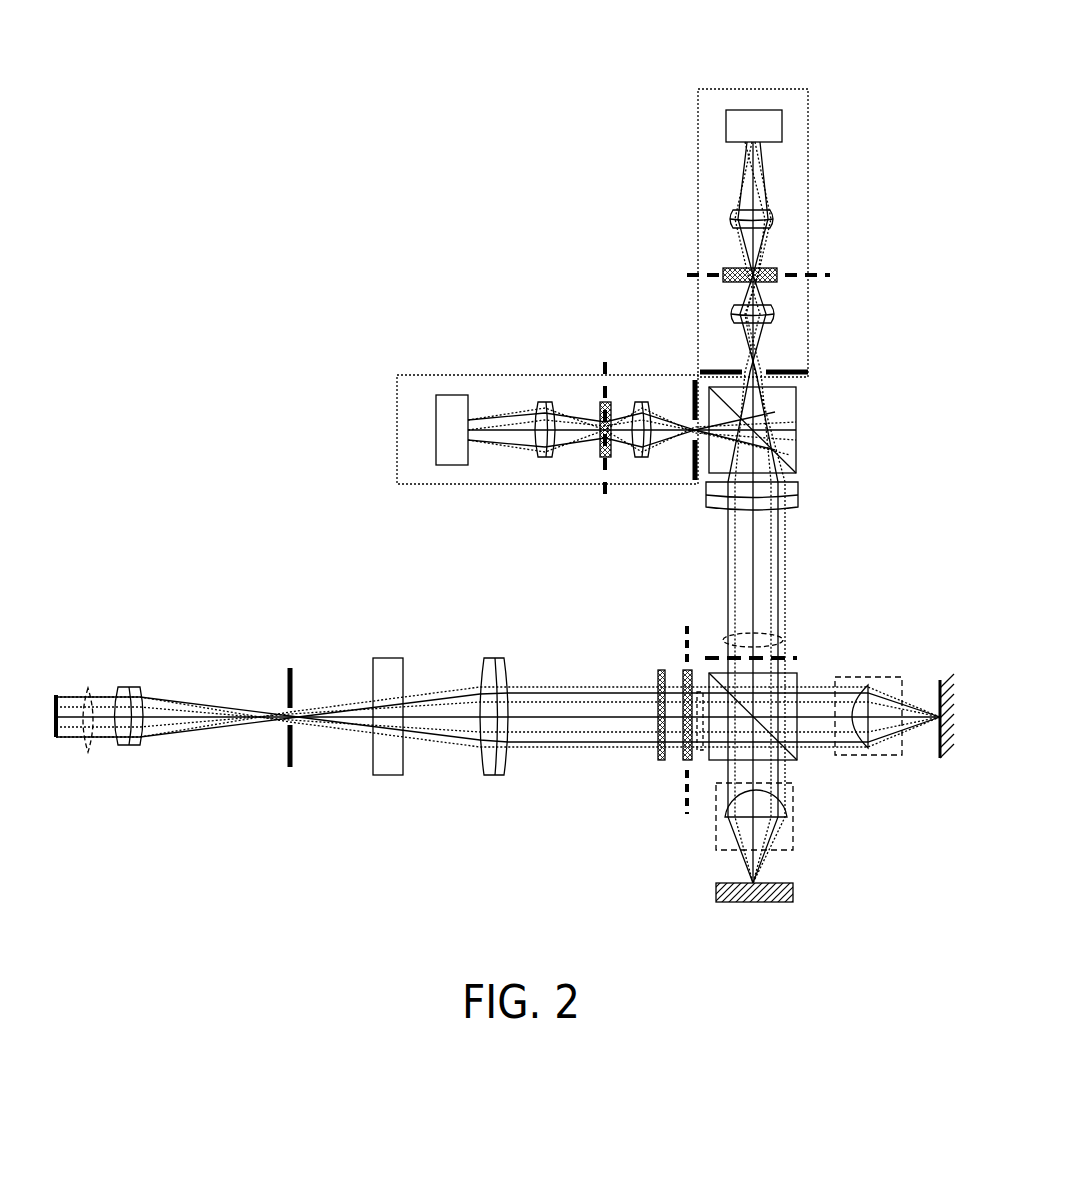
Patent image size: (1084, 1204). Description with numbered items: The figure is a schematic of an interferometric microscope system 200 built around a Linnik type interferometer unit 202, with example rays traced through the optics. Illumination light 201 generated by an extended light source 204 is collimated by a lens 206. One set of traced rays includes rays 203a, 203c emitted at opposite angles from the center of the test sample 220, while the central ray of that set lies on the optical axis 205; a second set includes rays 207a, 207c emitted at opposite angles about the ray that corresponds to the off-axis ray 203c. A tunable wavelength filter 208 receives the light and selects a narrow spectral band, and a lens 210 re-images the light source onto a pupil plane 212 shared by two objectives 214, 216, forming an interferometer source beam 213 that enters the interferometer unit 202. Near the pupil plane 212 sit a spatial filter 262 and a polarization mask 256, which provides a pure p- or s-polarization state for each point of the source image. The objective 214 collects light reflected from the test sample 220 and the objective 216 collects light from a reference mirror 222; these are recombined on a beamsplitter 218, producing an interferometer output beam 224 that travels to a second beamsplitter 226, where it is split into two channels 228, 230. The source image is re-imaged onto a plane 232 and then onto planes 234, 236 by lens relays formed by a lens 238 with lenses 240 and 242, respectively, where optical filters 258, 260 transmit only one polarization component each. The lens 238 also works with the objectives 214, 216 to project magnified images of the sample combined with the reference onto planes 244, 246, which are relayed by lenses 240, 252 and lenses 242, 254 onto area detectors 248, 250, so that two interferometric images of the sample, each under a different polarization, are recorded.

The interferometric microscope system 200 is at (293, 168).
The illumination light 201 is at (91, 687).
The Linnik type interferometer unit 202 is at (891, 815).
The ray 203a is at (222, 706).
The ray 203c is at (232, 724).
The extended light source 204 is at (58, 694).
The optical axis 205 is at (182, 716).
The lens 206 is at (128, 686).
The ray 207a is at (190, 724).
The ray 207c is at (217, 738).
The tunable wavelength filter 208 is at (387, 657).
The lens 210 is at (492, 657).
The pupil plane 212 is at (686, 806).
The interferometer source beam 213 is at (699, 691).
The objective 214 is at (786, 816).
The objective 216 is at (868, 733).
The beamsplitter 218 is at (800, 672).
The test sample 220 is at (774, 890).
The reference mirror 222 is at (946, 670).
The interferometer output beam 224 is at (784, 640).
The beamsplitter 226 is at (797, 425).
The channel 228 is at (410, 377).
The channel 230 is at (766, 88).
The plane 232 is at (712, 655).
The plane 234 is at (595, 419).
The plane 236 is at (778, 275).
The lens 238 is at (781, 496).
The lens 240 is at (647, 441).
The lens 242 is at (734, 309).
The plane 244 is at (703, 369).
The plane 246 is at (692, 388).
The area detector 248 is at (435, 460).
The area detector 250 is at (725, 131).
The lens 252 is at (544, 442).
The lens 254 is at (771, 221).
The polarization mask 256 is at (686, 688).
The optical filter 258 is at (605, 460).
The optical filter 260 is at (776, 272).
The spatial filter 262 is at (660, 758).